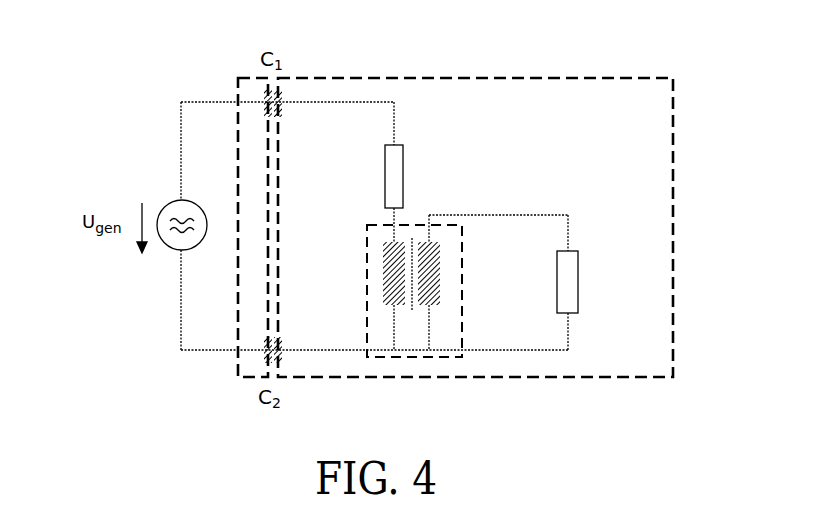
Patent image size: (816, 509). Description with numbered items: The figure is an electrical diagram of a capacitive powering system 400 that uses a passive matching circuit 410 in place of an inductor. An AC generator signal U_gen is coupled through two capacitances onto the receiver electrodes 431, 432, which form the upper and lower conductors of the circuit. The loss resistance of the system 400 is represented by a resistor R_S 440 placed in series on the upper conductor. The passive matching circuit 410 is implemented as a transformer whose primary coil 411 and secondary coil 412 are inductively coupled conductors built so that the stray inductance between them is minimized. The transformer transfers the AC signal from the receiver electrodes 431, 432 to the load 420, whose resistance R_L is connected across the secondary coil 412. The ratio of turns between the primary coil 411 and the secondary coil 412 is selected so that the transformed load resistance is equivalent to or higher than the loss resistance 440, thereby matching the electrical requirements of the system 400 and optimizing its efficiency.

The capacitive powering system 400 is at (603, 77).
The passive matching circuit 410 is at (434, 357).
The primary coil 411 is at (384, 258).
The secondary coil 412 is at (438, 258).
The load 420 is at (580, 260).
The receiver electrode 431 is at (358, 102).
The receiver electrode 432 is at (360, 350).
The resistor R_S 440 is at (405, 160).